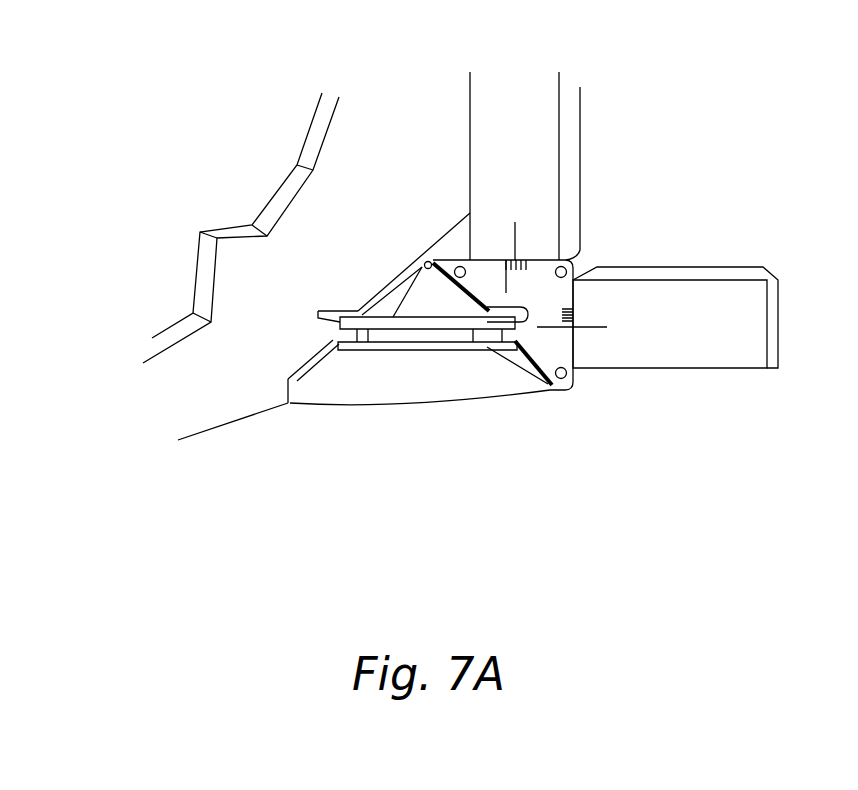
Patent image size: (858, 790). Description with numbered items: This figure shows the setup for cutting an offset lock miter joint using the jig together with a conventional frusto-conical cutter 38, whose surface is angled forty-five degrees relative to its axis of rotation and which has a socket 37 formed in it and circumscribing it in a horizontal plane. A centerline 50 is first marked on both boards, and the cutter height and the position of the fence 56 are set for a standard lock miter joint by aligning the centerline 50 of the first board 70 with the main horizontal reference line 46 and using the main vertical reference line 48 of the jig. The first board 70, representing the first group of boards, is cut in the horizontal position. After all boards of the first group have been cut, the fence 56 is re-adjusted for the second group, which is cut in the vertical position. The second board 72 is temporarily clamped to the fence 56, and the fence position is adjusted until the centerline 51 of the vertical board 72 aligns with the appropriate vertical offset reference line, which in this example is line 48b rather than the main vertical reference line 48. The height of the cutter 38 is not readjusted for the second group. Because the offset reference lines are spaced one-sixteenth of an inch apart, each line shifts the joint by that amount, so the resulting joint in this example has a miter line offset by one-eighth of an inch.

The fence 56 is at (303, 253).
The second board 72 is at (504, 152).
The centerline 51 is at (513, 242).
The main vertical reference line 48 is at (503, 280).
The vertical offset reference line 48b is at (517, 260).
The socket 37 is at (333, 338).
The cutter 38 is at (405, 392).
The first board 70 is at (687, 338).
The centerline 50 is at (592, 328).
The main horizontal reference line 46 is at (553, 328).